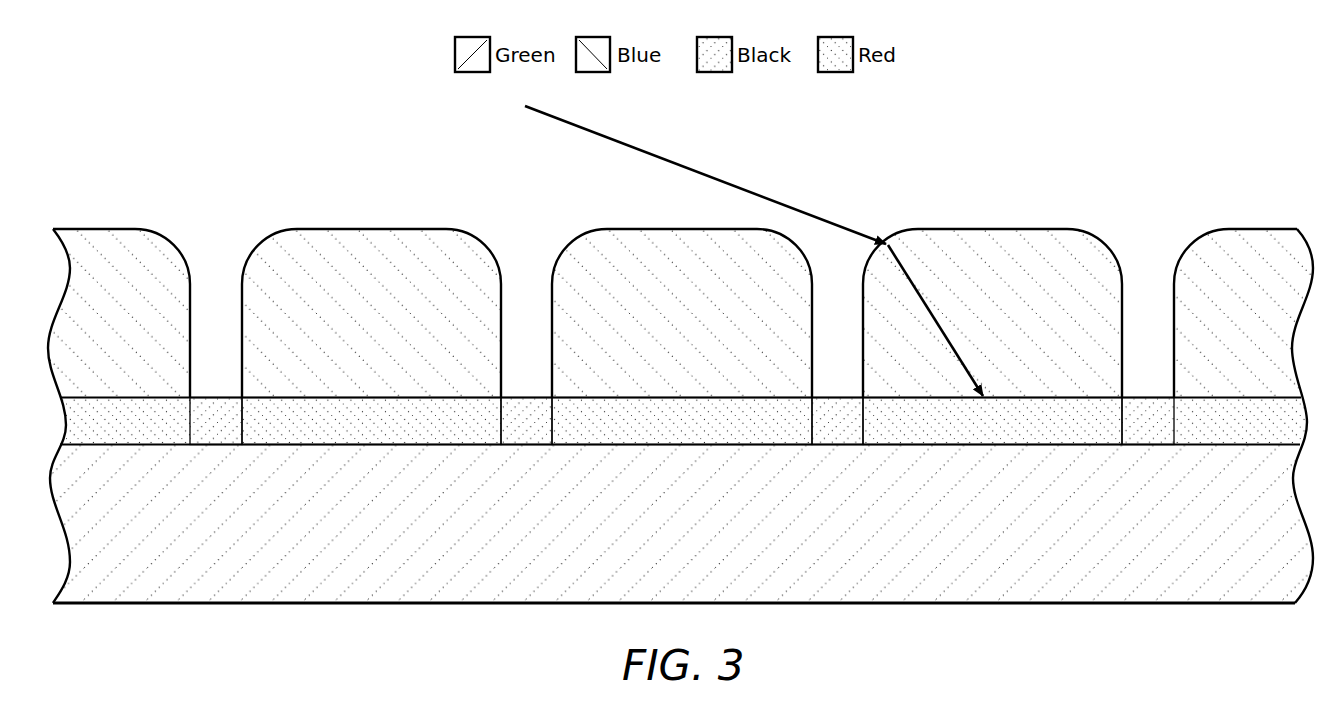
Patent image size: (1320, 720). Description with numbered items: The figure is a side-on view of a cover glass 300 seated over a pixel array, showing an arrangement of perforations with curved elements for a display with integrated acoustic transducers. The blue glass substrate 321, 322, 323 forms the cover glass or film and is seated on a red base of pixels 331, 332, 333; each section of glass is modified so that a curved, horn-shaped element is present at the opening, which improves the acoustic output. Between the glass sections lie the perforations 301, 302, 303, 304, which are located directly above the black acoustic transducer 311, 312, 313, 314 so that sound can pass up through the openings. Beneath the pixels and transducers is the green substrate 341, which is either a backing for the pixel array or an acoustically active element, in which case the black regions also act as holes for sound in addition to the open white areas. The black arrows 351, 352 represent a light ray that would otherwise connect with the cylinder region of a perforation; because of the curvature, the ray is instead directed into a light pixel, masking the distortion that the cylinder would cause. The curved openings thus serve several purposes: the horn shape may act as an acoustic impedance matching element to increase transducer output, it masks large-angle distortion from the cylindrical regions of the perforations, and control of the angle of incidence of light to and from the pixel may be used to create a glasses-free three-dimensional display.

The cover glass 300 is at (118, 627).
The perforation 301 is at (215, 293).
The perforation 302 is at (527, 293).
The perforation 303 is at (837, 293).
The perforation 304 is at (1148, 293).
The acoustic transducer 311 is at (213, 437).
The acoustic transducer 312 is at (524, 437).
The acoustic transducer 313 is at (835, 437).
The acoustic transducer 314 is at (1145, 437).
The blue glass substrate 321 is at (372, 240).
The blue glass substrate 322 is at (684, 240).
The blue glass substrate 323 is at (994, 240).
The red base of pixels 331 is at (368, 437).
The red base of pixels 332 is at (680, 437).
The red base of pixels 333 is at (990, 437).
The green substrate 341 is at (1245, 593).
The black arrow 351 is at (640, 152).
The black arrow 352 is at (915, 287).